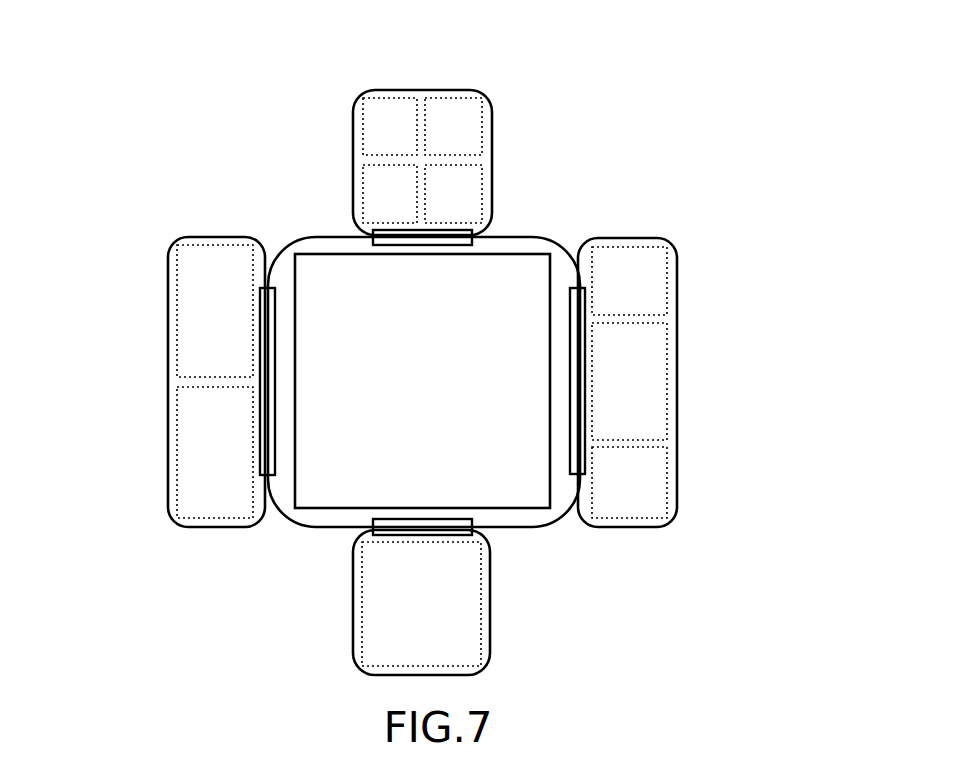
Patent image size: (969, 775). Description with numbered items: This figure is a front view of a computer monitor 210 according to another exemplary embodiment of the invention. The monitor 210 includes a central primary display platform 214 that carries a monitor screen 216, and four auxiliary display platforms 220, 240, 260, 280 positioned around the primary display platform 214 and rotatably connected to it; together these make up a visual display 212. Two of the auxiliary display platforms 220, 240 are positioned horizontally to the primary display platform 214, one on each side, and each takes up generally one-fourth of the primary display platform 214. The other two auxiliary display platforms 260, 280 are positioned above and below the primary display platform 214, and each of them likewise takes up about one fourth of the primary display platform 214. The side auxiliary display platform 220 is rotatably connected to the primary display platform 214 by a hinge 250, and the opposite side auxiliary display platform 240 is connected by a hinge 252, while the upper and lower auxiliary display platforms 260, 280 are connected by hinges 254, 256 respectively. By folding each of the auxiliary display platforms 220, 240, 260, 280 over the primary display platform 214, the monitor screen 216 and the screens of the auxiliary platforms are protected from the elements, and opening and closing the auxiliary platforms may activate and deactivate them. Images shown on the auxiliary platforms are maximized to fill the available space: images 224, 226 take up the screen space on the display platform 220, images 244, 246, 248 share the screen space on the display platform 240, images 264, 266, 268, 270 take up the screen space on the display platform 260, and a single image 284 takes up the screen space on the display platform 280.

The monitor 210 is at (602, 193).
The visual display 212 is at (370, 93).
The primary display platform 214 is at (497, 520).
The monitor screen 216 is at (493, 278).
The auxiliary display platform 220 is at (227, 240).
The image 224 is at (193, 332).
The image 226 is at (197, 456).
The auxiliary display platform 240 is at (645, 240).
The image 244 is at (655, 298).
The image 246 is at (655, 370).
The image 248 is at (655, 472).
The hinge 250 is at (270, 475).
The hinge 252 is at (578, 474).
The hinge 254 is at (385, 237).
The hinge 256 is at (387, 527).
The auxiliary display platform 260 is at (463, 92).
The image 264 is at (390, 126).
The image 266 is at (453, 126).
The image 268 is at (390, 194).
The image 270 is at (453, 194).
The auxiliary display platform 280 is at (482, 683).
The image 284 is at (421, 604).